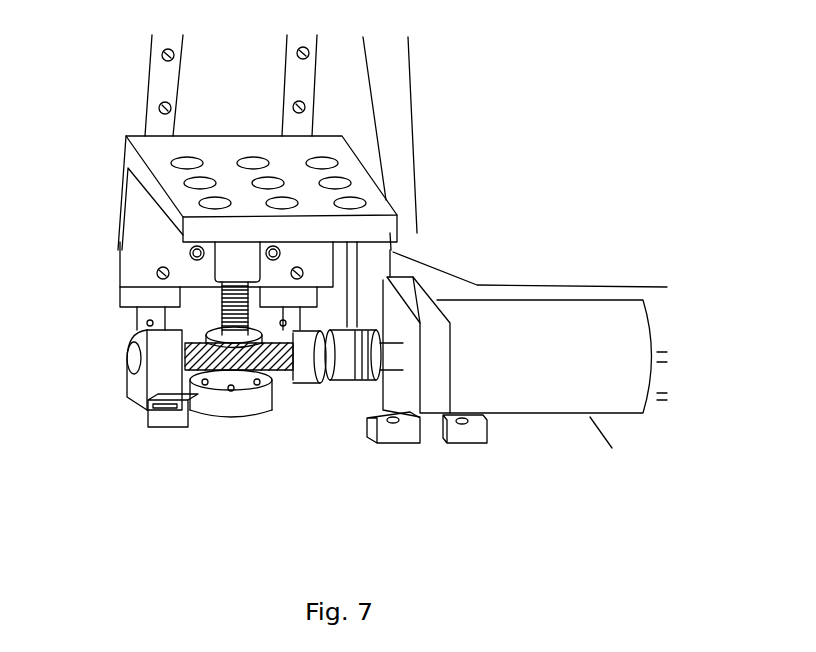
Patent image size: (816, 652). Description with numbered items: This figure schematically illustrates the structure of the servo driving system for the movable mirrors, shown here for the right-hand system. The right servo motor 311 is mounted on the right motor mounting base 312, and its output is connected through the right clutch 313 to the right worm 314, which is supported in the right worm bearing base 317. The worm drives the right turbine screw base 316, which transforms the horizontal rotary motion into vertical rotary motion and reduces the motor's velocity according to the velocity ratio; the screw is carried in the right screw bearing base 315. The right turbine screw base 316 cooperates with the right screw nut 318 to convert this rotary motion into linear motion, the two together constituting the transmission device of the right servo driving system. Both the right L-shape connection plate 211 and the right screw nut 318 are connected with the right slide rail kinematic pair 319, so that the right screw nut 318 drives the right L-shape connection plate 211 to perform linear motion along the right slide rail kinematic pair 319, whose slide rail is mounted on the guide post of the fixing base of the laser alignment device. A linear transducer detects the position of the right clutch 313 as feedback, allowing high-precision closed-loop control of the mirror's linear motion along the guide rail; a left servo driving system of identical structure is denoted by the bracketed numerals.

The right L-shape connection plate 211 is at (288, 173).
The right servo motor 311 is at (598, 370).
The right motor mounting base 312 is at (442, 378).
The right clutch 313 is at (372, 356).
The right worm 314 is at (266, 362).
The right screw bearing base 315 is at (232, 396).
The right turbine screw base 316 is at (210, 347).
The right worm bearing base 317 is at (168, 353).
The right screw nut 318 is at (230, 280).
The right slide rail kinematic pair 319 is at (148, 80).